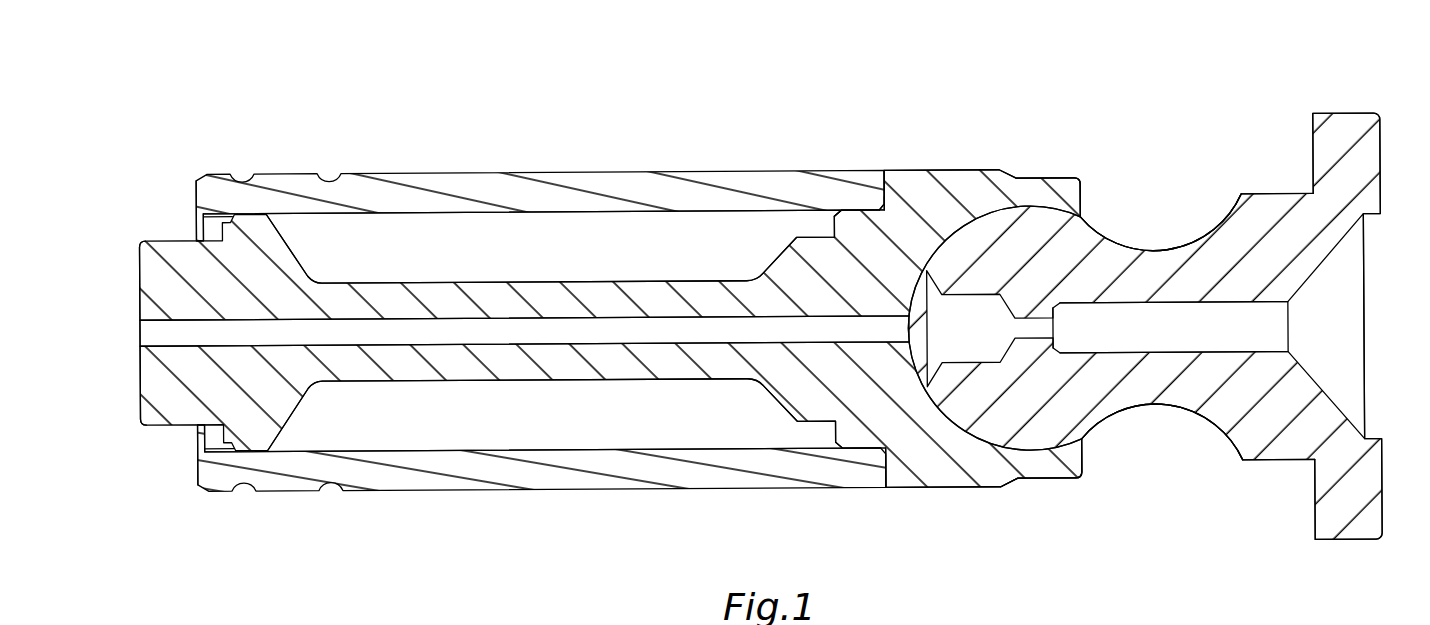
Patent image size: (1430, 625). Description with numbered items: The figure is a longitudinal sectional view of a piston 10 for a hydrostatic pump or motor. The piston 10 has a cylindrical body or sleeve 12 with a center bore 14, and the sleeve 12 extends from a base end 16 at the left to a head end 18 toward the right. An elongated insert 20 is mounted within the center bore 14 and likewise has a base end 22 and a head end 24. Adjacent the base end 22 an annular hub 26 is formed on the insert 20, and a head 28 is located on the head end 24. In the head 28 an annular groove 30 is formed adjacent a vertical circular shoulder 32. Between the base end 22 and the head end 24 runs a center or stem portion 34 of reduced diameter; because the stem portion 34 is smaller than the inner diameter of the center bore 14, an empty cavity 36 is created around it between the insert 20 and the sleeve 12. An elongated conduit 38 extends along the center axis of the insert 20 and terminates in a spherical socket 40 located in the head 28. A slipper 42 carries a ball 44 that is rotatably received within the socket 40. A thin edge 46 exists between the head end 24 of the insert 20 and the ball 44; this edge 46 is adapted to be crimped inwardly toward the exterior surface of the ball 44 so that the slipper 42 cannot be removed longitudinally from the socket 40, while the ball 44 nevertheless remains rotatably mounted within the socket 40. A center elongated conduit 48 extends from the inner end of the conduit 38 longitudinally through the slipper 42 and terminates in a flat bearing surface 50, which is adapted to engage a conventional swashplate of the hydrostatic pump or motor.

The piston 10 is at (762, 307).
The cylindrical body or sleeve 12 is at (414, 172).
The center bore 14 is at (488, 215).
The base end 16 is at (199, 222).
The head end 18 is at (886, 483).
The insert 20 is at (962, 171).
The base end 22 is at (141, 251).
The head end 24 is at (1080, 182).
The annular hub 26 is at (243, 452).
The head 28 is at (1002, 489).
The annular groove 30 is at (851, 212).
The vertical circular shoulder 32 is at (872, 195).
The center or stem portion 34 is at (405, 382).
The empty cavity 36 is at (464, 425).
The elongated conduit 38 is at (663, 330).
The spherical socket 40 is at (965, 428).
The slipper 42 is at (1194, 238).
The ball 44 is at (1065, 440).
The thin edge 46 is at (1082, 215).
The center elongated conduit 48 is at (1192, 304).
The flat bearing surface 50 is at (1383, 137).